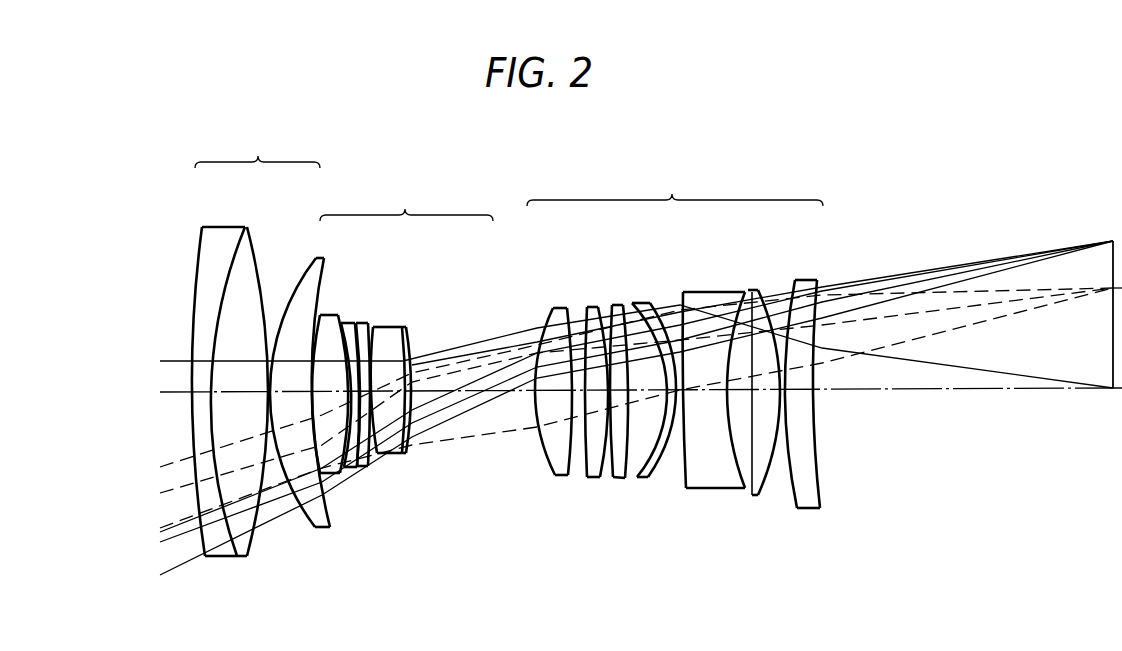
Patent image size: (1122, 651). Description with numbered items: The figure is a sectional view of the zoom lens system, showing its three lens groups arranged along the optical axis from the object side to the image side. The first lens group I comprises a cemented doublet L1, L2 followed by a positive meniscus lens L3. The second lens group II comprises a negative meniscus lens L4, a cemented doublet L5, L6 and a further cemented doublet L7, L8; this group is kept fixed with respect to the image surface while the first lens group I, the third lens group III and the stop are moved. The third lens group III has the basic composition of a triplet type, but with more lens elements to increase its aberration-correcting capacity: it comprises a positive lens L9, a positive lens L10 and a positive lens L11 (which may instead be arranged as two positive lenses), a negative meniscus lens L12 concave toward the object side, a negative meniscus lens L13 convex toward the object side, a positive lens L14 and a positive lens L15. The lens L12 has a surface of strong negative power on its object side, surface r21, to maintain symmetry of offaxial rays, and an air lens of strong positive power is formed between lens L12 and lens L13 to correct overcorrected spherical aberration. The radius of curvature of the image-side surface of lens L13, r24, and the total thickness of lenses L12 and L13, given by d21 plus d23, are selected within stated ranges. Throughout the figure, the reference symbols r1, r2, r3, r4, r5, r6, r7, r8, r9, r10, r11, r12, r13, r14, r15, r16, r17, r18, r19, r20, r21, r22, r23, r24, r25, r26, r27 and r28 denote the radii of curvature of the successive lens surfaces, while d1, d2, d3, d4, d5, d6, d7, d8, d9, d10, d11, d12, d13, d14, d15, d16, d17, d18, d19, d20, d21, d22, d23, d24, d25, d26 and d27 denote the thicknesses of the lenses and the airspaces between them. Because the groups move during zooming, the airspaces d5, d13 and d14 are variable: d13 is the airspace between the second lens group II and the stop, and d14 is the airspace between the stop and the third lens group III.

The first lens group I is at (257, 147).
The second lens group II is at (406, 201).
The third lens group III is at (675, 187).
The cemented doublet lens element L1 is at (222, 227).
The cemented doublet lens element L2 is at (246, 227).
The positive meniscus lens L3 is at (318, 258).
The negative meniscus lens L4 is at (325, 315).
The cemented doublet lens element L5 is at (350, 323).
The cemented doublet lens element L6 is at (363, 323).
The cemented doublet lens element L7 is at (388, 327).
The cemented doublet lens element L8 is at (406, 327).
The positive lens L9 is at (558, 308).
The positive lens L10 is at (592, 307).
The positive lens L11 is at (617, 305).
The negative meniscus lens L12 is at (641, 303).
The negative meniscus lens L13 is at (710, 292).
The positive lens L14 is at (755, 290).
The positive lens L15 is at (805, 280).
The radius of curvature r1 is at (196, 553).
The radius of curvature r2 is at (230, 557).
The radius of curvature r3 is at (254, 545).
The radius of curvature r4 is at (308, 519).
The radius of curvature r5 is at (325, 527).
The radius of curvature r6 is at (328, 478).
The radius of curvature r7 is at (341, 474).
The radius of curvature r8 is at (350, 469).
The radius of curvature r9 is at (359, 468).
The radius of curvature r10 is at (365, 462).
The radius of curvature r11 is at (372, 455).
The radius of curvature r12 is at (404, 454).
The radius of curvature r13 is at (410, 445).
The radius of curvature r14 is at (468, 462).
The radius of curvature r15 is at (548, 448).
The radius of curvature r16 is at (567, 477).
The radius of curvature r17 is at (588, 480).
The radius of curvature r18 is at (601, 480).
The radius of curvature r19 is at (614, 481).
The radius of curvature r20 is at (627, 482).
The radius of curvature r21 is at (641, 481).
The radius of curvature r22 is at (650, 480).
The radius of curvature r23 is at (693, 490).
The radius of curvature r24 is at (736, 484).
The radius of curvature r25 is at (754, 496).
The radius of curvature r26 is at (767, 484).
The radius of curvature r27 is at (801, 509).
The radius of curvature r28 is at (823, 509).
The lens thickness d1 is at (200, 391).
The lens thickness d2 is at (231, 392).
The airspace d3 is at (267, 392).
The lens thickness d4 is at (286, 392).
The variable airspace d5 is at (312, 392).
The lens thickness d6 is at (330, 345).
The lens thickness d7 is at (341, 320).
The lens thickness d8 is at (357, 322).
The lens thickness d9 is at (372, 330).
The lens thickness d10 is at (385, 330).
The lens thickness d11 is at (395, 358).
The lens thickness d12 is at (406, 340).
The variable airspace d13 is at (465, 330).
The variable airspace d14 is at (518, 390).
The lens thickness d15 is at (545, 322).
The lens thickness d16 is at (580, 330).
The lens thickness d17 is at (592, 316).
The lens thickness d18 is at (617, 322).
The lens thickness d19 is at (640, 322).
The lens thickness d20 is at (700, 366).
The lens thickness d21 is at (696, 433).
The airspace d22 is at (713, 406).
The lens thickness d23 is at (710, 388).
The lens thickness d24 is at (737, 393).
The lens thickness d25 is at (760, 393).
The lens thickness d26 is at (778, 392).
The lens thickness d27 is at (805, 391).